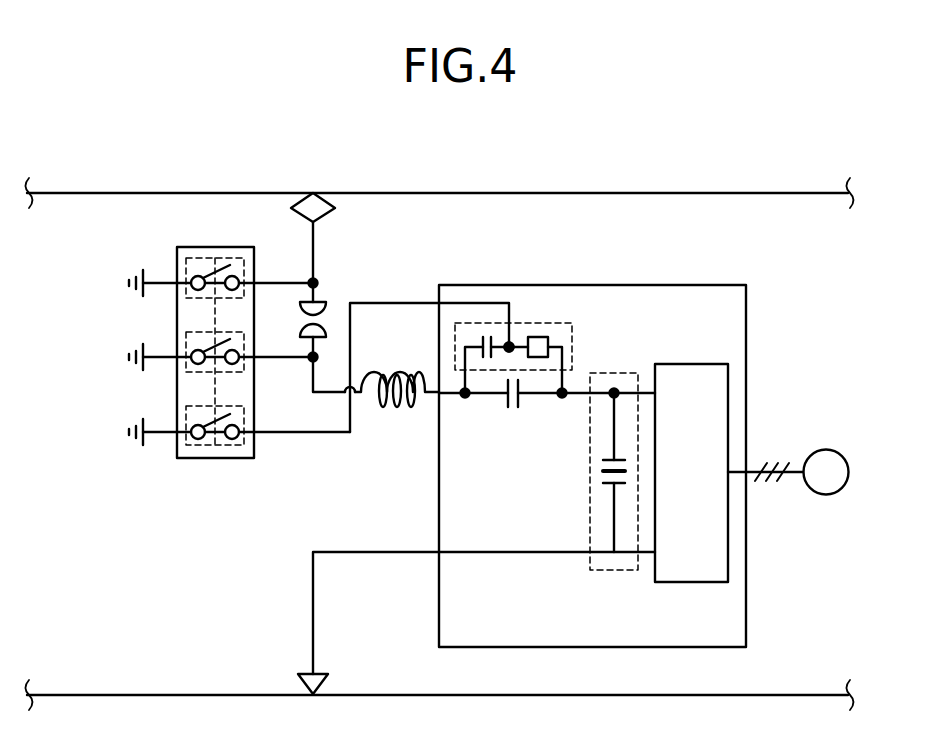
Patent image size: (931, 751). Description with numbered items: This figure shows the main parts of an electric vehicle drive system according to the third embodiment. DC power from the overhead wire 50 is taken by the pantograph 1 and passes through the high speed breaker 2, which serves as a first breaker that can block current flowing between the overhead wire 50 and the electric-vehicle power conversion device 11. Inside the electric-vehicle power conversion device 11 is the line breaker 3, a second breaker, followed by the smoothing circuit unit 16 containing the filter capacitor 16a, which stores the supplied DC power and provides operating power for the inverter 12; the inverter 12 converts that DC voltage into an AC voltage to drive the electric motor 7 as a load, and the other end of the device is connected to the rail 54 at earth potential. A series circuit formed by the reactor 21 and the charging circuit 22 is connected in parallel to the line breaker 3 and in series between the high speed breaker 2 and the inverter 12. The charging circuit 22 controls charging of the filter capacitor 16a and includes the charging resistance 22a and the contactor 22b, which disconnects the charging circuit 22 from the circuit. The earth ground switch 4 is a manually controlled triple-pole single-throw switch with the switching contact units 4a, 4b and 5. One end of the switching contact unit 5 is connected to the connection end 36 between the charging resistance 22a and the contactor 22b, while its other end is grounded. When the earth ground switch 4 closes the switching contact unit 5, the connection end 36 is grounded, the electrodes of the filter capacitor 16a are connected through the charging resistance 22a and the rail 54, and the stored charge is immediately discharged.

The pantograph 1 is at (324, 219).
The high speed breaker 2 is at (321, 313).
The line breaker 3 is at (503, 405).
The earth ground switch 4 is at (222, 331).
The switching contact unit 4a is at (181, 264).
The switching contact unit 4b is at (181, 338).
The switching contact unit 5 is at (181, 412).
The electric motor 7 is at (824, 450).
The electric-vehicle power conversion device 11 is at (638, 285).
The inverter 12 is at (690, 364).
The smoothing circuit unit 16 is at (581, 498).
The filter capacitor 16a is at (606, 485).
The reactor 21 is at (396, 380).
The charging circuit 22 is at (502, 303).
The charging resistance 22a is at (538, 336).
The contactor 22b is at (474, 336).
The connection end 36 is at (511, 343).
The overhead wire 50 is at (812, 193).
The rail 54 is at (812, 695).